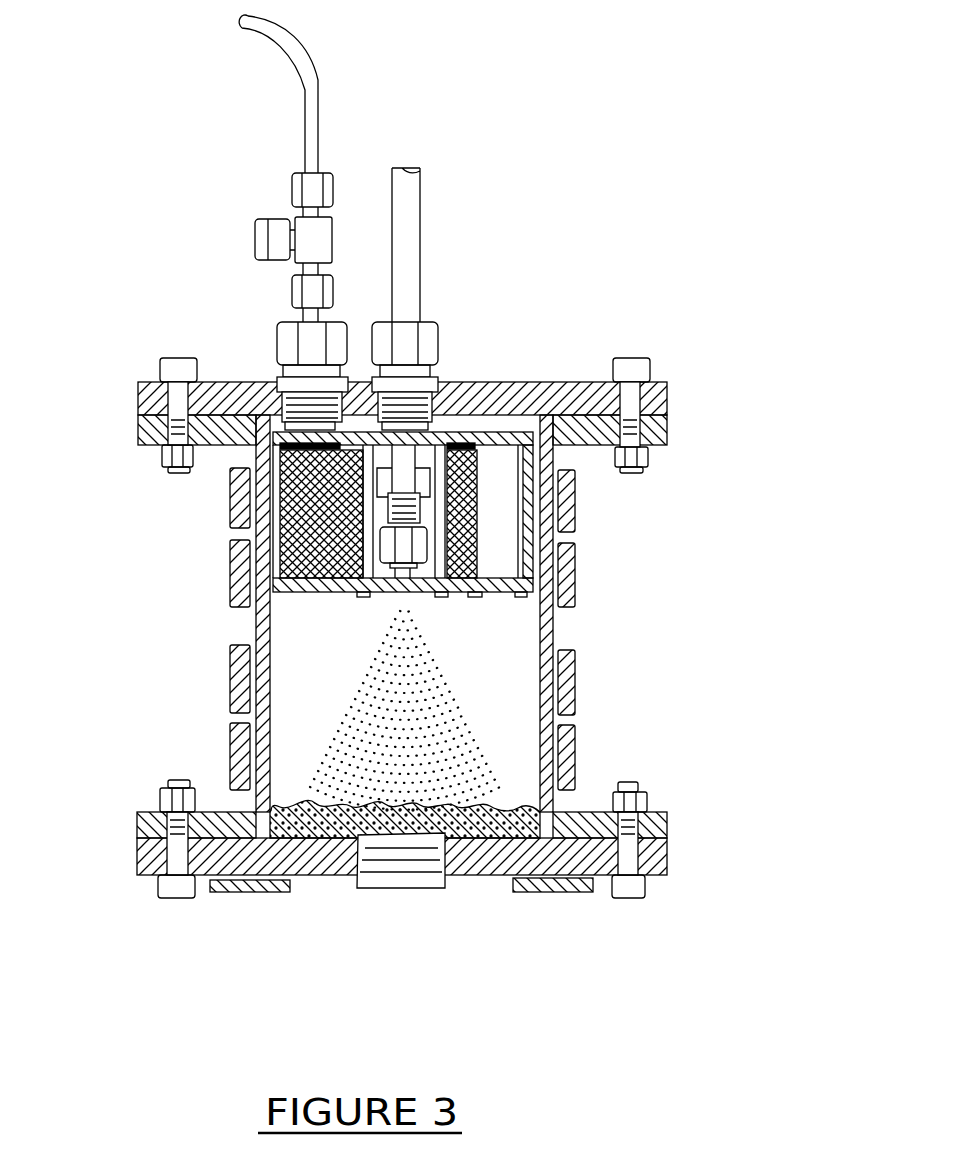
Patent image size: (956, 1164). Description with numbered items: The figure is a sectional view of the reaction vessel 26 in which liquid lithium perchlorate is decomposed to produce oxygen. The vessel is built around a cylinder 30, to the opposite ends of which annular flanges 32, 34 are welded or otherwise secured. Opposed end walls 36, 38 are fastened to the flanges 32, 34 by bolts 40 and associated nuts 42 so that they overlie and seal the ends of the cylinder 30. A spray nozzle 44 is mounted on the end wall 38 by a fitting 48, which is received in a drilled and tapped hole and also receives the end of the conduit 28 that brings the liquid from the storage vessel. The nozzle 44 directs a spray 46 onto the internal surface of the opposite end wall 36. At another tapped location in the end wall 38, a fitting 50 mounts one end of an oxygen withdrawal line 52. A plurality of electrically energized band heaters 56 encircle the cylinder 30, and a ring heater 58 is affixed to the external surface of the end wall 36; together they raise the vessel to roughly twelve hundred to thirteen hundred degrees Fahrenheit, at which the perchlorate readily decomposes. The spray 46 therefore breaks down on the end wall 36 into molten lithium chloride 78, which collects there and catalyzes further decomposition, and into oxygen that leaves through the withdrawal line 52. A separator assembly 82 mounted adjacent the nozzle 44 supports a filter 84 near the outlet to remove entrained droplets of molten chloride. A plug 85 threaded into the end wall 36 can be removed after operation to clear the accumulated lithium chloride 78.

The reaction vessel 26 is at (796, 460).
The conduit 28 is at (408, 230).
The cylinder 30 is at (545, 640).
The annular flange 32 is at (667, 820).
The annular flange 34 is at (667, 433).
The end wall 36 is at (667, 857).
The end wall 38 is at (667, 402).
The bolts 40 is at (172, 887).
The nuts 42 is at (160, 802).
The spray nozzle 44 is at (395, 598).
The spray 46 is at (365, 707).
The fitting 48 is at (432, 343).
The fitting 50 is at (283, 352).
The oxygen withdrawal line 52 is at (320, 78).
The band heaters 56 is at (570, 500).
The ring heater 58 is at (543, 892).
The molten LiCl 78 is at (333, 825).
The separator assembly 82 is at (339, 550).
The filter 84 is at (307, 528).
The plug 85 is at (418, 890).